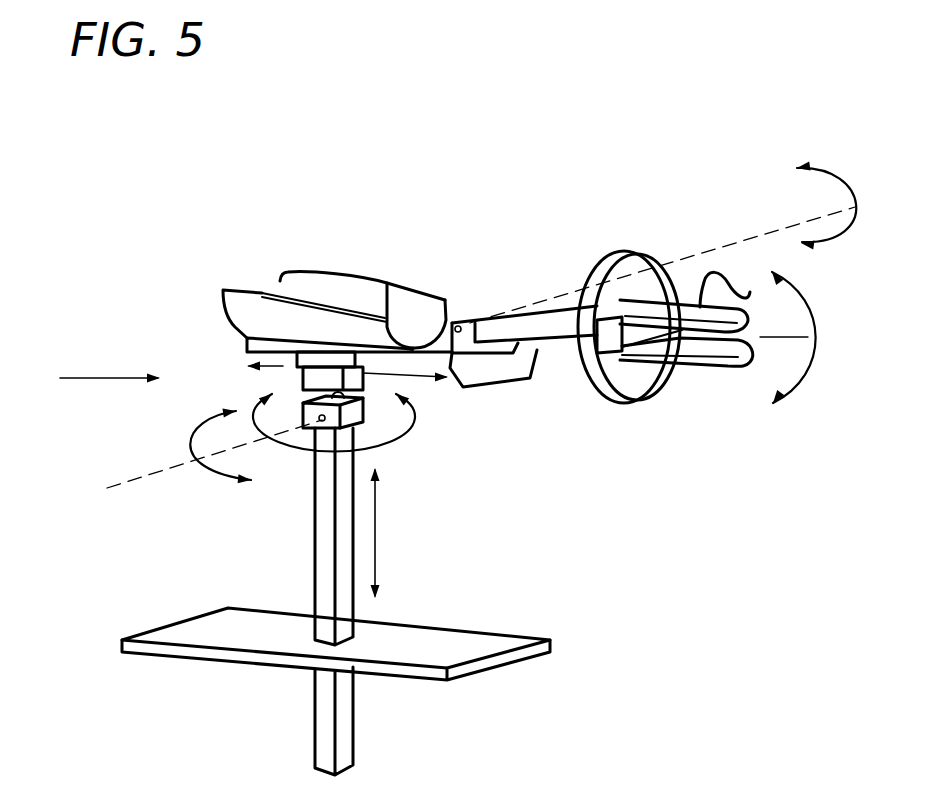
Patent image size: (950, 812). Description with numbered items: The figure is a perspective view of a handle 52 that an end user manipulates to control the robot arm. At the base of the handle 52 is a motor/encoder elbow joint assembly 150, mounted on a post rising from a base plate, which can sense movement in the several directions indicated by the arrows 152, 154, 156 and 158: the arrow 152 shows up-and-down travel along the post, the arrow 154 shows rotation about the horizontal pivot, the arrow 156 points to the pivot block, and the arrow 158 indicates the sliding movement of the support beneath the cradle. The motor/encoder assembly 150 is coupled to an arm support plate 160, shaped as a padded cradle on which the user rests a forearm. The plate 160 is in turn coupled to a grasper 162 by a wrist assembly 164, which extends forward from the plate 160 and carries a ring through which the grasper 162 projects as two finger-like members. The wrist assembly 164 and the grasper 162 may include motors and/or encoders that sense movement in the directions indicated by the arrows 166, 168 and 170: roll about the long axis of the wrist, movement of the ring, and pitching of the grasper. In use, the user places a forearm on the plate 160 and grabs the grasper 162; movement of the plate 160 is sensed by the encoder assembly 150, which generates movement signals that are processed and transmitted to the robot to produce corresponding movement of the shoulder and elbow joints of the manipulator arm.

The handle 52 is at (603, 481).
The motor/encoder elbow joint assembly 150 is at (87, 382).
The arrow 152 is at (375, 520).
The arrow 154 is at (183, 480).
The arrow 156 is at (275, 445).
The arrow 158 is at (262, 378).
The arm support plate 160 is at (325, 275).
The grasper 162 is at (749, 290).
The wrist assembly 164 is at (553, 230).
The arrow 166 is at (847, 172).
The arrow 168 is at (649, 296).
The arrow 170 is at (808, 355).